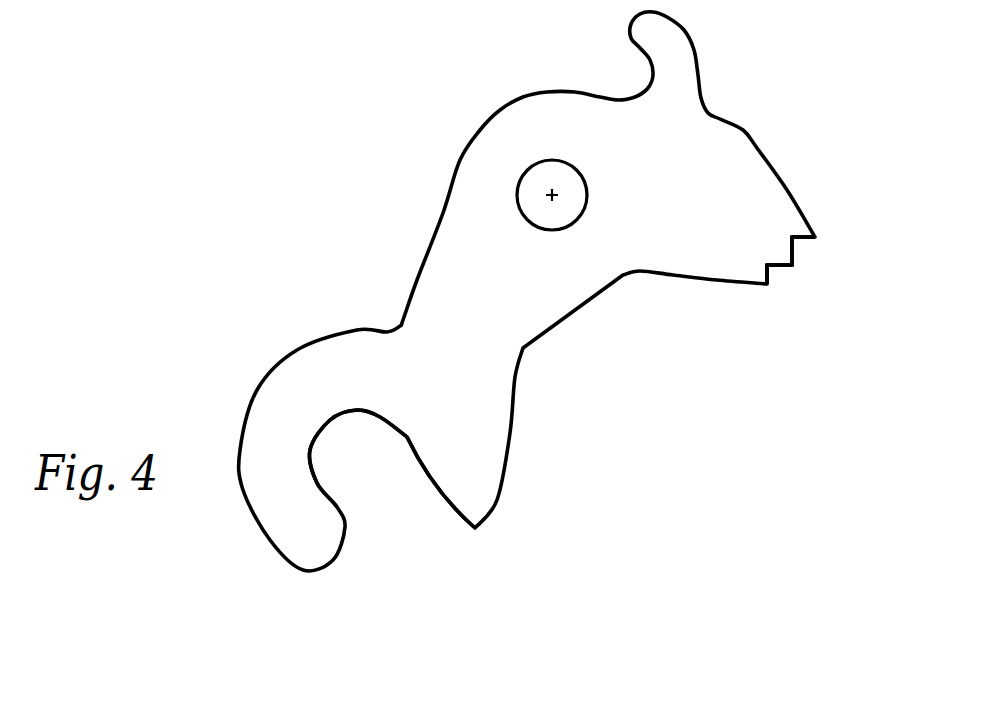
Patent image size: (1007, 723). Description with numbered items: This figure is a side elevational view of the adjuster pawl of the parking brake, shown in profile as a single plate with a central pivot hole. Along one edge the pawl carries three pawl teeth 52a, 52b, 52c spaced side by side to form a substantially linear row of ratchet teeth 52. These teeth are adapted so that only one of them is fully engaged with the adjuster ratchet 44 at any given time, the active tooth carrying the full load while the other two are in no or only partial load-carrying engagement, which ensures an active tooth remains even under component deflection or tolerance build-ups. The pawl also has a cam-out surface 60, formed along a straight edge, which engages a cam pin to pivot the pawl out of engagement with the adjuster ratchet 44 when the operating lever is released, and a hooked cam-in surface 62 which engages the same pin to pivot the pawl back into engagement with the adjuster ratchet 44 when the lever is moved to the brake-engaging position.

The adjuster ratchet 44 is at (460, 157).
The ratchet teeth 52 is at (762, 284).
The pawl tooth 52a is at (772, 287).
The pawl tooth 52b is at (792, 265).
The pawl tooth 52c is at (815, 238).
The cam-out surface 60 is at (436, 491).
The cam-in surface 62 is at (323, 487).